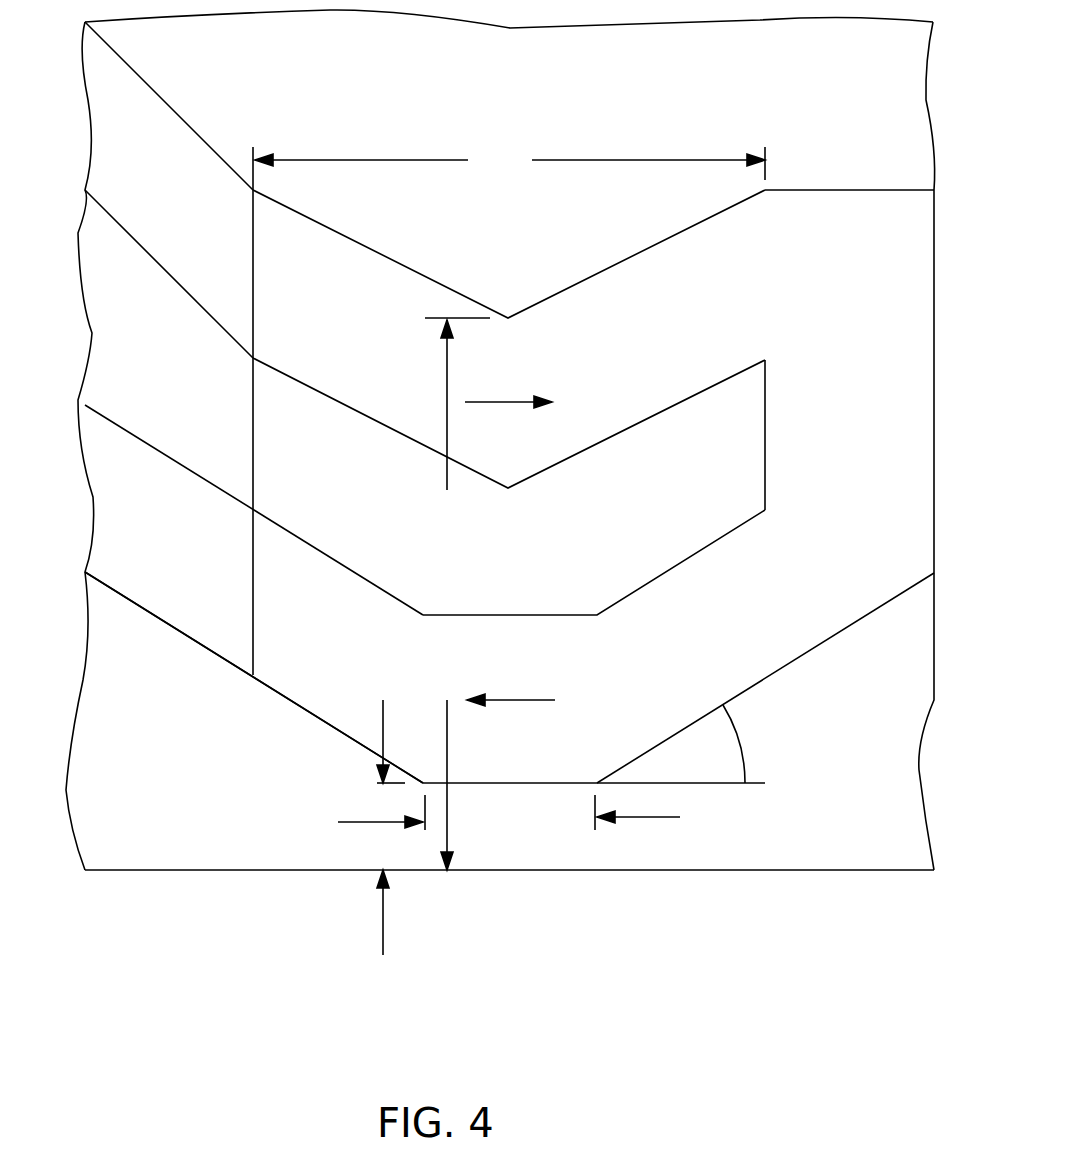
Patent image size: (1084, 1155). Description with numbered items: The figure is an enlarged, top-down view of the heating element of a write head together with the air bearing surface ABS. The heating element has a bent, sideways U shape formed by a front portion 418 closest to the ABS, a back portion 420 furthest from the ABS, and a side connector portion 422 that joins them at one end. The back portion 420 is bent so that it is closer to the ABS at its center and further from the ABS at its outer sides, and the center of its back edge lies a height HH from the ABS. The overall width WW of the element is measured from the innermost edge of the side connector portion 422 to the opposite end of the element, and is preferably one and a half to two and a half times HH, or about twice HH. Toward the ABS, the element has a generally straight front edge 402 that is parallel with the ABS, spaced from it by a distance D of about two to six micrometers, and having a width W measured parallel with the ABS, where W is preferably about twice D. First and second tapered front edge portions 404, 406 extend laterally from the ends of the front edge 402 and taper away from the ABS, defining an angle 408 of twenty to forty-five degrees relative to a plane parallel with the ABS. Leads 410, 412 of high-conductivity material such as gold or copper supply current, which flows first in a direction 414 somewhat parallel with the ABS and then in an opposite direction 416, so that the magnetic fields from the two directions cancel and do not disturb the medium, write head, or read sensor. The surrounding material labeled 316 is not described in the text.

The insulating layer / substrate material 316 is at (581, 87).
The front edge 402 is at (497, 785).
The first tapered front edge portion 404 is at (790, 668).
The second tapered front edge portion 406 is at (306, 708).
The angle 408 is at (738, 723).
The lead 410 is at (206, 181).
The lead 412 is at (226, 538).
The first current direction 414 is at (518, 400).
The second current direction 416 is at (508, 702).
The front portion 418 is at (536, 649).
The back portion 420 is at (543, 359).
The side connector portion 422 is at (892, 435).
The air bearing surface ABS is at (710, 870).
The overall width WW is at (510, 163).
The height HH is at (445, 383).
The distance D is at (378, 722).
The width W is at (640, 818).